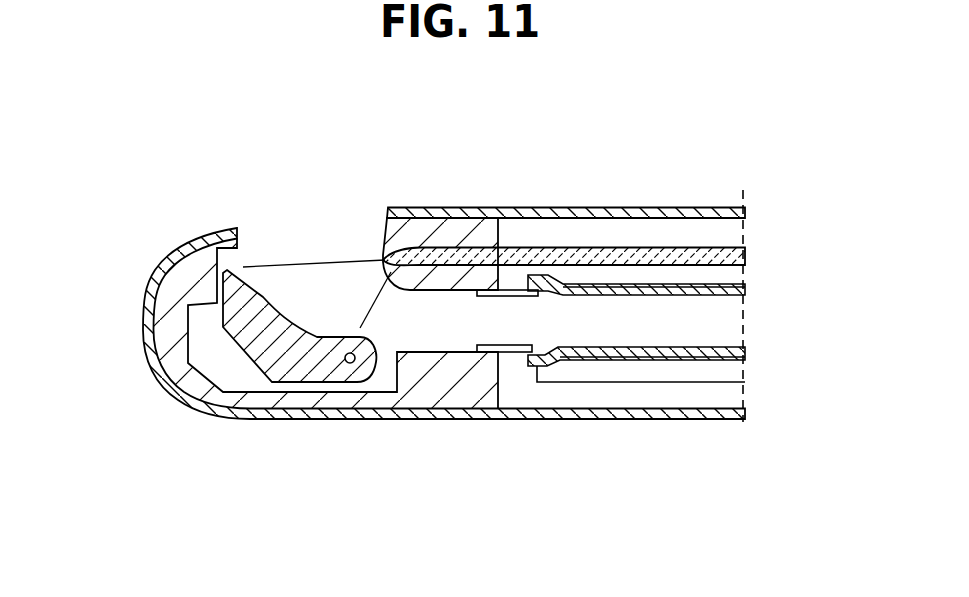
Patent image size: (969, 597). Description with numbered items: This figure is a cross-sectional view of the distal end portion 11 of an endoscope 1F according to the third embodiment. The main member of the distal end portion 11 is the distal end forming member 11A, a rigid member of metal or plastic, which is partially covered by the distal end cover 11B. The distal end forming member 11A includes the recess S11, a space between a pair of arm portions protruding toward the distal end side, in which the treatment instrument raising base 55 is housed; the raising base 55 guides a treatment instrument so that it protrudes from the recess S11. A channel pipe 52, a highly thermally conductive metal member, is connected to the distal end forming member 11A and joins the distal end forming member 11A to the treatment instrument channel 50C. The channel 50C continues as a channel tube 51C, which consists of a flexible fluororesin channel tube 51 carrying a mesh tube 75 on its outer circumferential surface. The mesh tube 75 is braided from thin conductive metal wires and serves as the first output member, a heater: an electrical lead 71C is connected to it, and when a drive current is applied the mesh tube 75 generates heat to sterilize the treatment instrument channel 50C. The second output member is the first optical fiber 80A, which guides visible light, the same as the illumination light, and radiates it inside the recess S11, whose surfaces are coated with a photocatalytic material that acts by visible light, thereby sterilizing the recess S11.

The endoscope 1F is at (118, 180).
The distal end portion 11 is at (317, 472).
The distal end forming member 11A is at (253, 420).
The distal end cover 11B is at (313, 420).
The treatment instrument raising base 55 is at (207, 367).
The recess S11 is at (347, 212).
The first optical fiber 80A is at (638, 247).
The treatment instrument channel 50C is at (677, 525).
The channel pipe 52 is at (503, 352).
The channel tube 51C is at (697, 477).
The channel tube 51 is at (583, 361).
The mesh tube 75 is at (710, 361).
The electrical lead 71C is at (720, 383).